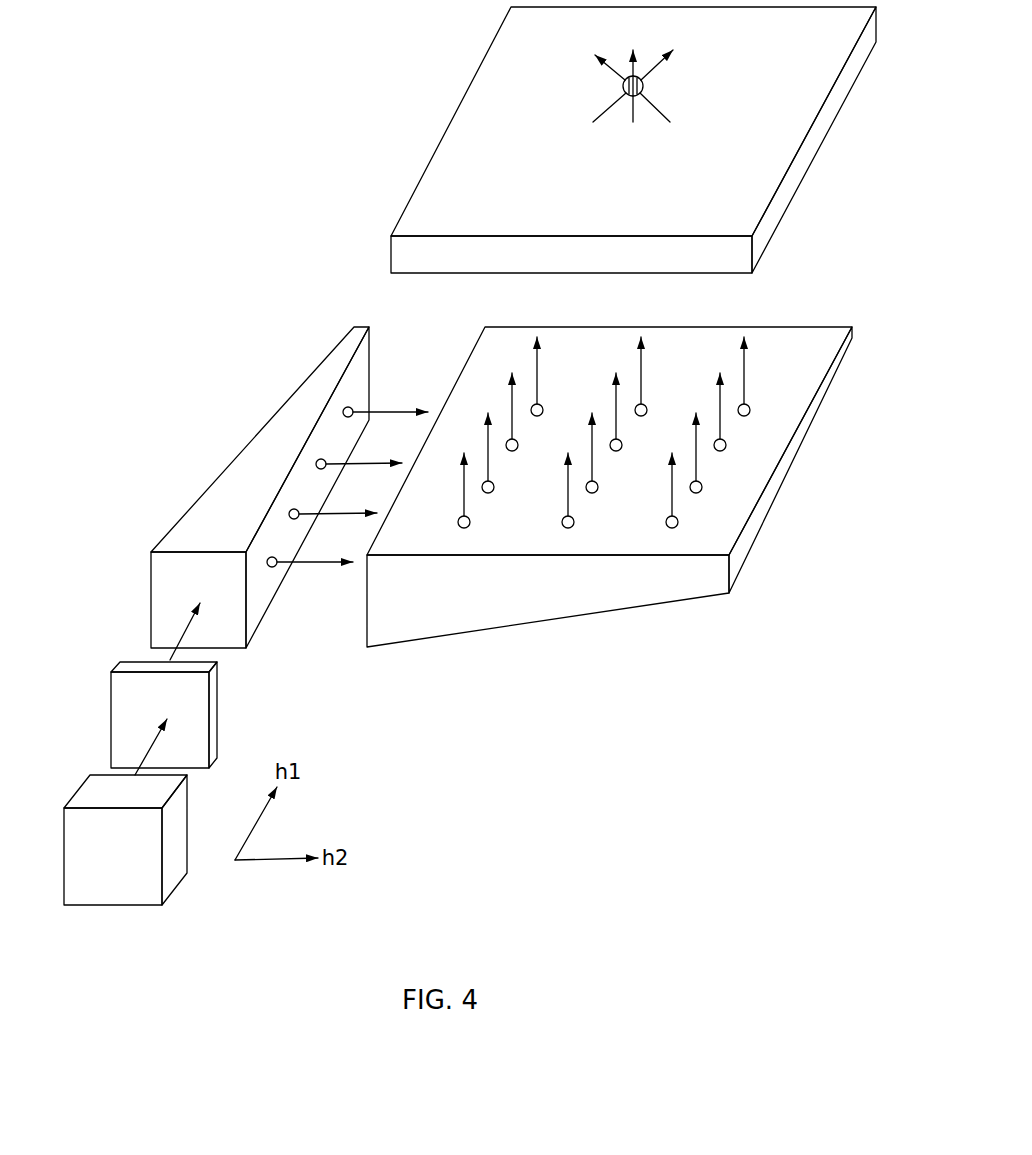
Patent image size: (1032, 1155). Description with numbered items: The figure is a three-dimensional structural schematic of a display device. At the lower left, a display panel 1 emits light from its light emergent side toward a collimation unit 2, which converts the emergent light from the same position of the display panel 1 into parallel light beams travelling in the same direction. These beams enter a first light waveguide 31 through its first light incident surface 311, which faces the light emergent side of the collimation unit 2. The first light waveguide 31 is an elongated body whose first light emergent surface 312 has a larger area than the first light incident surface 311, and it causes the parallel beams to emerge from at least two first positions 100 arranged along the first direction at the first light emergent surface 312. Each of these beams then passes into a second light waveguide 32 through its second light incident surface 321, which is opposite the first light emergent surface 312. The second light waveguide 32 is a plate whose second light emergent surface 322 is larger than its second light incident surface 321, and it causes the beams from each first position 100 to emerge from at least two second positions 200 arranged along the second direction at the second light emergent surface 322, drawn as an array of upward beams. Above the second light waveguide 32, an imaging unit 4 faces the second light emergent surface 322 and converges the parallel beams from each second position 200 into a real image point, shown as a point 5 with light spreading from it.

The display panel 1 is at (92, 795).
The collimation unit 2 is at (120, 702).
The first light waveguide 31 is at (232, 498).
The first light incident surface 311 is at (168, 578).
The first light emergent surface 312 is at (258, 598).
The second light waveguide 32 is at (579, 516).
The second light incident surface 321 is at (363, 633).
The second light emergent surface 322 is at (723, 515).
The first positions 100 is at (352, 416).
The second positions 200 is at (457, 526).
The imaging unit 4 is at (402, 252).
The scattering point 5 is at (643, 84).